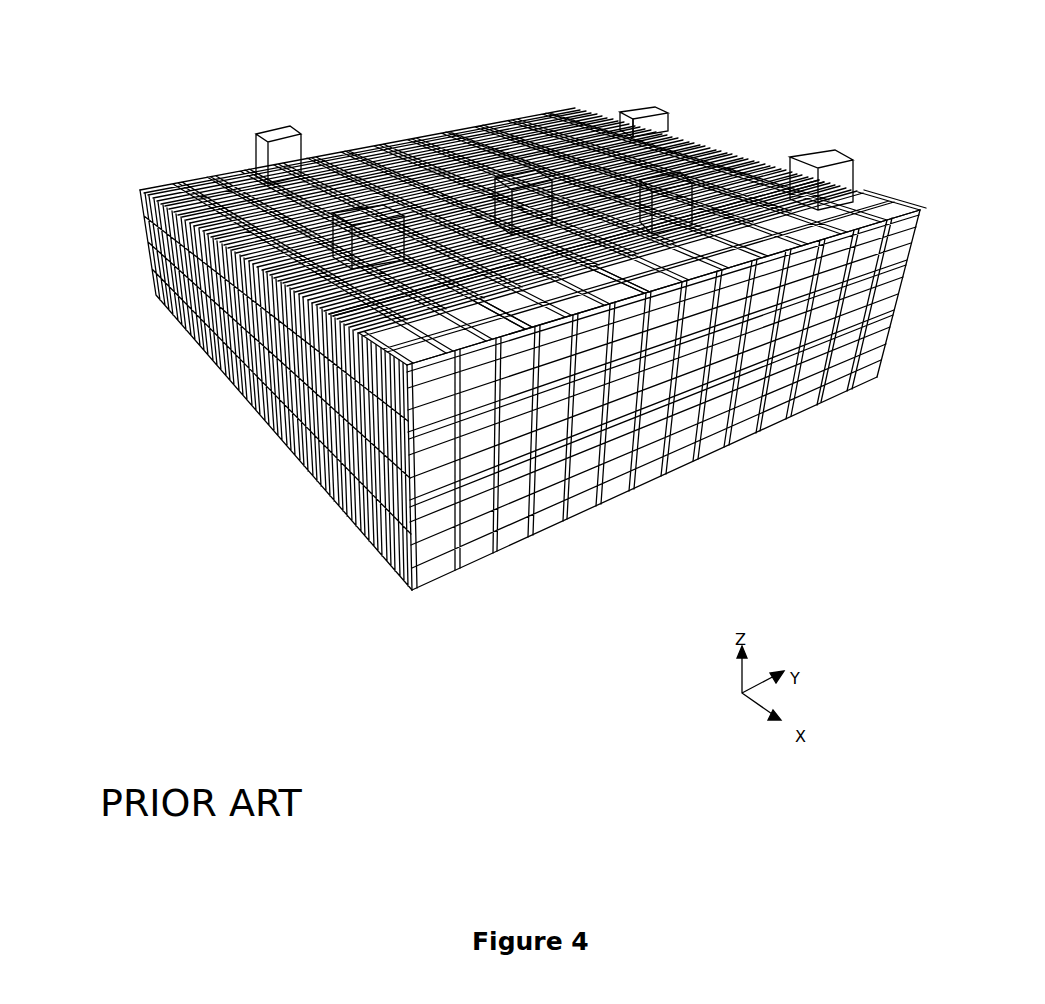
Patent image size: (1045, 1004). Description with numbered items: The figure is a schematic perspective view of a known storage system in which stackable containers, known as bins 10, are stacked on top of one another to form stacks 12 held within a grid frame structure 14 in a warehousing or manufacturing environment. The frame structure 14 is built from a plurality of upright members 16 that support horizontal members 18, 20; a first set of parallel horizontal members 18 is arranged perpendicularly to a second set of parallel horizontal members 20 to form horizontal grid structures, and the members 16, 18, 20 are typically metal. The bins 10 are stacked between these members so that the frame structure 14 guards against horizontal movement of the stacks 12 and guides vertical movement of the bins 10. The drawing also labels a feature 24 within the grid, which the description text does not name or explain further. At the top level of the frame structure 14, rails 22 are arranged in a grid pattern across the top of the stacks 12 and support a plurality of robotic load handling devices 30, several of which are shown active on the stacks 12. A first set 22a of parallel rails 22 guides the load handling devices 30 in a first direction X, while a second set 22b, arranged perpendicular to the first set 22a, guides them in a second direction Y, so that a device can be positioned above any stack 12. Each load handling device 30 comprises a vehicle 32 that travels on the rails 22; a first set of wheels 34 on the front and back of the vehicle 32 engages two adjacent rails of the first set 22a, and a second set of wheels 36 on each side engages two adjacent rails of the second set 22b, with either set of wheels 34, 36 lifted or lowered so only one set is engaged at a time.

The bin 10 is at (440, 490).
The stack 12 is at (797, 417).
The frame structure 14 is at (880, 200).
The upright member 16 is at (378, 510).
The first set of parallel horizontal members 18 is at (475, 327).
The second set of parallel horizontal members 20 is at (315, 400).
The rail 22 is at (250, 183).
The first set of parallel rails 22a is at (335, 278).
The second set of parallel rails 22b is at (385, 195).
The cell region 24 is at (597, 292).
The robotic load handling device 30 is at (655, 133).
The vehicle 32 is at (856, 150).
The first set of wheels 34 is at (660, 130).
The second set of wheels 36 is at (505, 240).